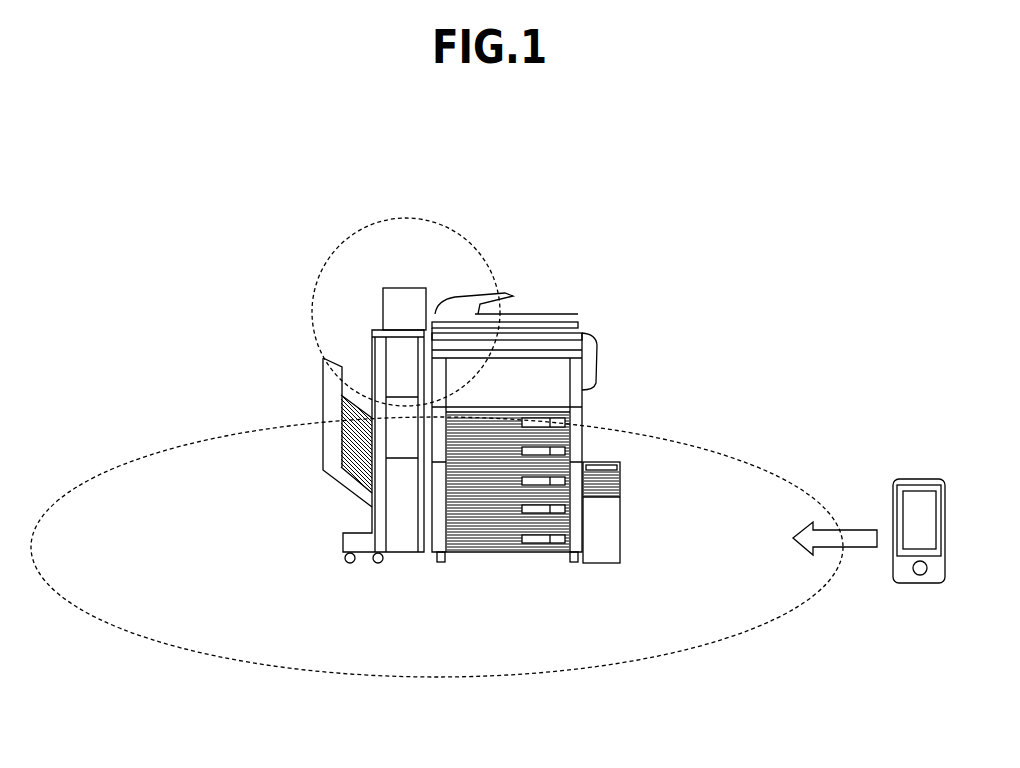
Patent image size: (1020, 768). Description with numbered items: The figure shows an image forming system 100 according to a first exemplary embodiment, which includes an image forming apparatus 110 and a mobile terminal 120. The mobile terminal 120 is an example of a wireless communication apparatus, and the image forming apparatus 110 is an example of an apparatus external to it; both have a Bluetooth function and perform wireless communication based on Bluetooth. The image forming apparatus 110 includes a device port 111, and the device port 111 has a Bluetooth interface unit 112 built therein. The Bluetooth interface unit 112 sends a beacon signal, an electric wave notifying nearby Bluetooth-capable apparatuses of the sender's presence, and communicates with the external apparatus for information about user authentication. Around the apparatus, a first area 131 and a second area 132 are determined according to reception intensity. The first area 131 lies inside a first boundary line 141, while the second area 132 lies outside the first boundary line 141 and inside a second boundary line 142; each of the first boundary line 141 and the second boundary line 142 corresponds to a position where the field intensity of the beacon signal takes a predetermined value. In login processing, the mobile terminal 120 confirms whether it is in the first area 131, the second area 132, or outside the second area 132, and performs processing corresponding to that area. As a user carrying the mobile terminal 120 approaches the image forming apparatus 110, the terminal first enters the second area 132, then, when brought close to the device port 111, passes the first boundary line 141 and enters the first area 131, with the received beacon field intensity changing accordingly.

The image forming system 100 is at (666, 230).
The image forming apparatus 110 is at (546, 322).
The device port 111 is at (396, 311).
The Bluetooth interface unit 112 is at (404, 309).
The mobile terminal 120 is at (922, 479).
The first area 131 is at (405, 226).
The second area 132 is at (607, 640).
The first boundary line 141 is at (322, 357).
The second boundary line 142 is at (446, 678).